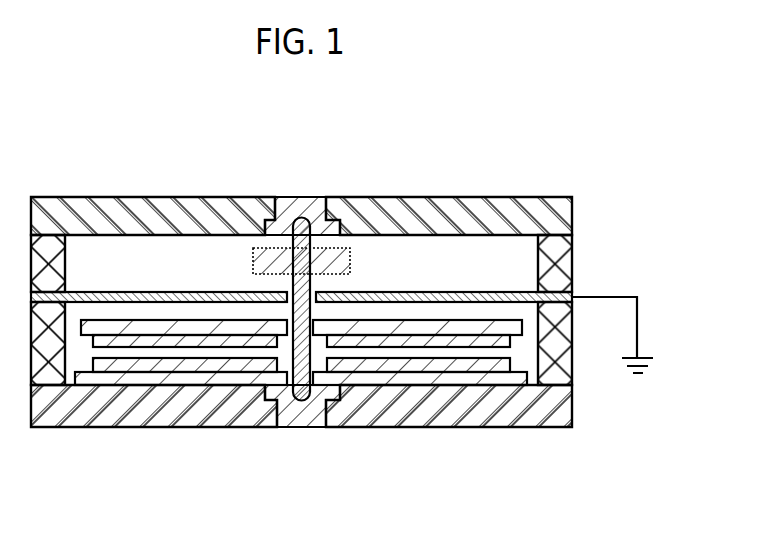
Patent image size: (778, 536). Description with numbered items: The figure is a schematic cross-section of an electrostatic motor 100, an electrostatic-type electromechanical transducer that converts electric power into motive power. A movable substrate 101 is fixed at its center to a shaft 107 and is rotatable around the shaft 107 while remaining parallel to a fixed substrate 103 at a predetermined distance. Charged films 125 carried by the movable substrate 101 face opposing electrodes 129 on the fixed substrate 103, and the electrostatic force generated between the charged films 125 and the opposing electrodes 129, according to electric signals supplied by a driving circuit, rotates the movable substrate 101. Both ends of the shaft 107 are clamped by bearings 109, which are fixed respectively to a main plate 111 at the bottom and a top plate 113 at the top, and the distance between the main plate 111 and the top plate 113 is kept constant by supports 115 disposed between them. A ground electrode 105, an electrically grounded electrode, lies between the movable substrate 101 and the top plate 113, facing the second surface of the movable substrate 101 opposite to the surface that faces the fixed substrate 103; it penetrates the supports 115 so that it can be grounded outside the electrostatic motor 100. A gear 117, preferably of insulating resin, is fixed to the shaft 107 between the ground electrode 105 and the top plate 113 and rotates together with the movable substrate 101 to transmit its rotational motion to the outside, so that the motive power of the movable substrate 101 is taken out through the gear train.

The electrostatic motor 100 is at (607, 118).
The movable substrate 101 is at (210, 325).
The fixed substrate 103 is at (147, 378).
The ground electrode 105 is at (505, 297).
The shaft 107 is at (306, 208).
The bearings 109 is at (294, 422).
The main plate 111 is at (448, 415).
The top plate 113 is at (437, 222).
The supports 115 is at (558, 268).
The gear 117 is at (256, 260).
The charged films 125 is at (111, 343).
The opposing electrodes 129 is at (222, 363).